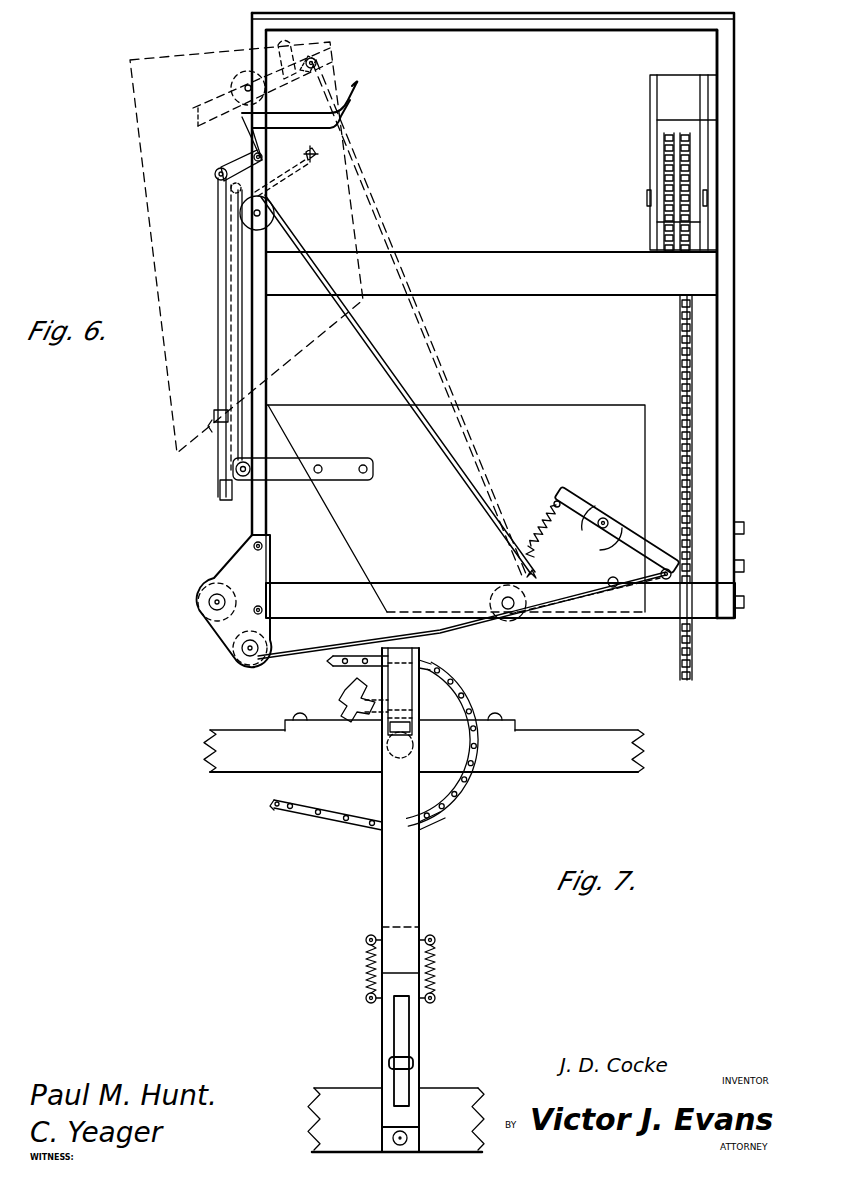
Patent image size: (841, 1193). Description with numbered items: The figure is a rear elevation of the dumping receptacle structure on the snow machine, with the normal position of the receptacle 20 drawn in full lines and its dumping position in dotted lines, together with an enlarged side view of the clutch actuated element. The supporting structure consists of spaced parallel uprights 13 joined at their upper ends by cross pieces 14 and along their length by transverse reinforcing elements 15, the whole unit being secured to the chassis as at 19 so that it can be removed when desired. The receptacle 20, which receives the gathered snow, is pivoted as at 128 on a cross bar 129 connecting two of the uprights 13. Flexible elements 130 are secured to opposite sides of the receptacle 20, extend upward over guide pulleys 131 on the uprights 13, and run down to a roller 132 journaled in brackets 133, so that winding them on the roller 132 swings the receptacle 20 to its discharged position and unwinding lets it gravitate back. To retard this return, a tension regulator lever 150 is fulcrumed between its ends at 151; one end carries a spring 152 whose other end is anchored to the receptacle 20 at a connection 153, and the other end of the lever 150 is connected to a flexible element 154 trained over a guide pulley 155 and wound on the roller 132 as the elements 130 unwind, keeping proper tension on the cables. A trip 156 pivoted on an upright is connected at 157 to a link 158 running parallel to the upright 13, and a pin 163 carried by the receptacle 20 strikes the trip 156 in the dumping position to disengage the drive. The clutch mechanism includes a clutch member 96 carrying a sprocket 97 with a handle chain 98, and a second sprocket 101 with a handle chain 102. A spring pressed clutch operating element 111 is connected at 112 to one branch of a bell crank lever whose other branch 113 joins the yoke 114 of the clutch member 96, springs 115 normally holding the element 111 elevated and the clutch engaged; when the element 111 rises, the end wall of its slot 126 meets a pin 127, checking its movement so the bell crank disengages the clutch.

In FIG. 6, the uprights 13 is at (722, 160).
In FIG. 6, the cross pieces 14 is at (538, 48).
In FIG. 6, the transverse reinforcing elements 15 is at (455, 264).
In FIG. 6, the securing means 19 is at (742, 566).
In FIG. 6, the receptacle 20 is at (488, 405).
In FIG. 7, the clutch member 96 is at (470, 700).
In FIG. 7, the sprocket 97 is at (342, 804).
In FIG. 6, the handle chain 98 is at (668, 135).
In FIG. 7, the handle chain 98 is at (280, 810).
In FIG. 6, the second sprocket 101 is at (686, 175).
In FIG. 6, the handle chain 102 is at (693, 376).
In FIG. 7, the clutch operating element 111 is at (420, 884).
In FIG. 7, the connection to bell crank lever 112 is at (352, 700).
In FIG. 7, the bell crank lever branch 113 is at (406, 660).
In FIG. 7, the yoke 114 is at (448, 680).
In FIG. 7, the springs 115 is at (440, 976).
In FIG. 7, the slot 126 is at (398, 1022).
In FIG. 7, the pin 127 is at (414, 1063).
In FIG. 6, the pivot 128 is at (284, 482).
In FIG. 6, the cross bar 129 is at (236, 469).
In FIG. 6, the flexible elements 130 is at (398, 386).
In FIG. 6, the guide pulleys 131 is at (270, 210).
In FIG. 6, the roller 132 is at (210, 600).
In FIG. 6, the brackets 133 is at (226, 566).
In FIG. 6, the lever 150 is at (578, 498).
In FIG. 6, the fulcrum 151 is at (606, 520).
In FIG. 6, the spring 152 is at (552, 512).
In FIG. 6, the hook 153 is at (537, 546).
In FIG. 6, the flexible element 154 is at (315, 652).
In FIG. 6, the guide pulley 155 is at (225, 661).
In FIG. 6, the trip 156 is at (360, 96).
In FIG. 6, the connection 157 is at (218, 168).
In FIG. 6, the link 158 is at (218, 250).
In FIG. 6, the pin 163 is at (318, 65).